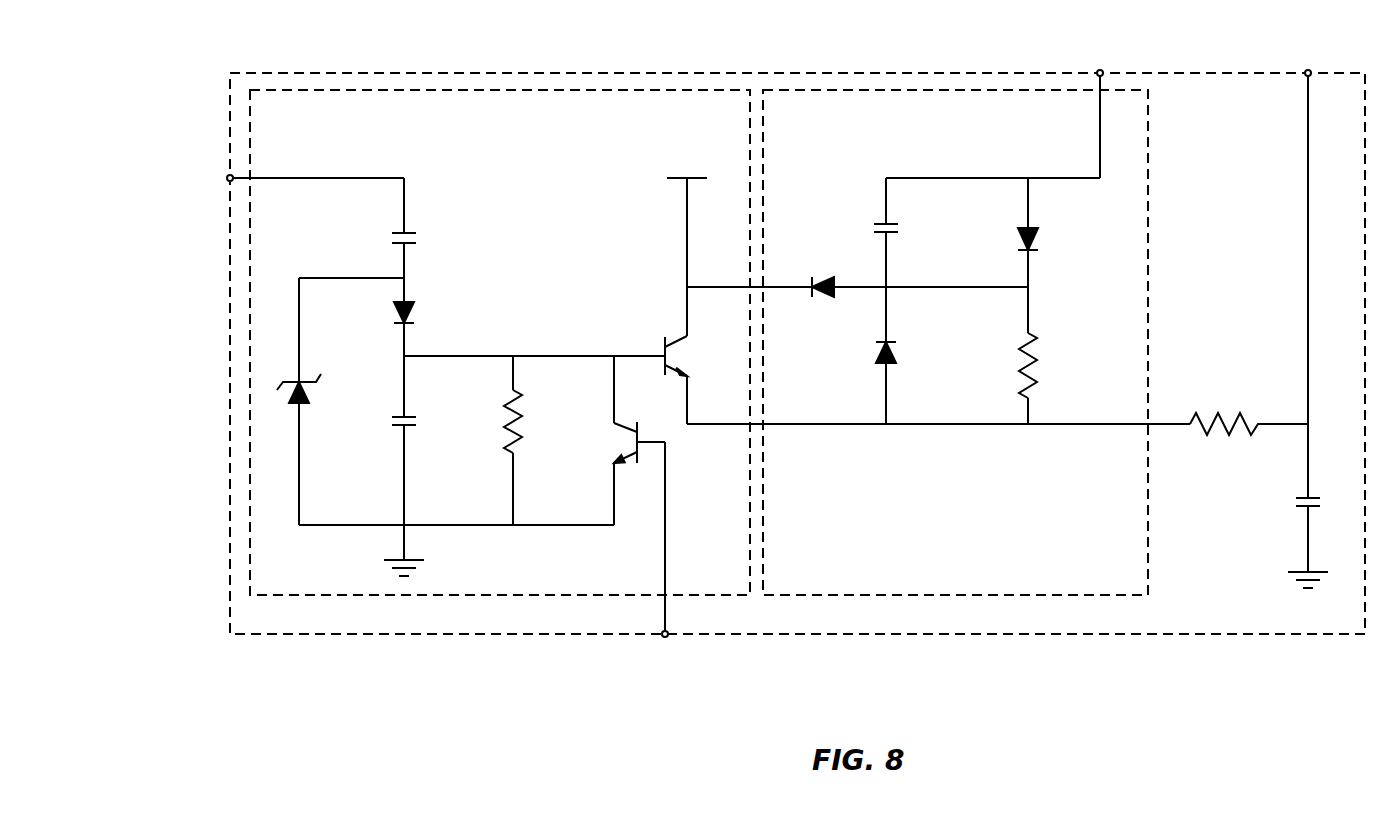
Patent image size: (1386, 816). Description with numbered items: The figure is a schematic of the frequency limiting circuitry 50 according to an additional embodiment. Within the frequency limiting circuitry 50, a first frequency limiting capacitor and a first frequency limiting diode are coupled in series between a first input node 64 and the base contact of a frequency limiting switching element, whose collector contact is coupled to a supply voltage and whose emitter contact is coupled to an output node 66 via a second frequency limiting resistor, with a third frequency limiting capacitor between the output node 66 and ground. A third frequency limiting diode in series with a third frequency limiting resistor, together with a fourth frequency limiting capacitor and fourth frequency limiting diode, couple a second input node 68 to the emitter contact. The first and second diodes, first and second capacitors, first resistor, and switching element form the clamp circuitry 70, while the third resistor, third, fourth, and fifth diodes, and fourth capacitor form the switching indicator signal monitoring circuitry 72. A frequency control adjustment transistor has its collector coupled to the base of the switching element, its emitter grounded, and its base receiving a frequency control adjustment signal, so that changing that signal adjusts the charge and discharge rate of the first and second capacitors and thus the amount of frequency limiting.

The frequency limiting circuitry 50 is at (1327, 625).
The first input node 64 is at (226, 180).
The output node 66 is at (1308, 70).
The second input node 68 is at (1100, 70).
The clamp circuitry 70 is at (710, 588).
The switching indicator signal monitoring circuitry 72 is at (1109, 588).